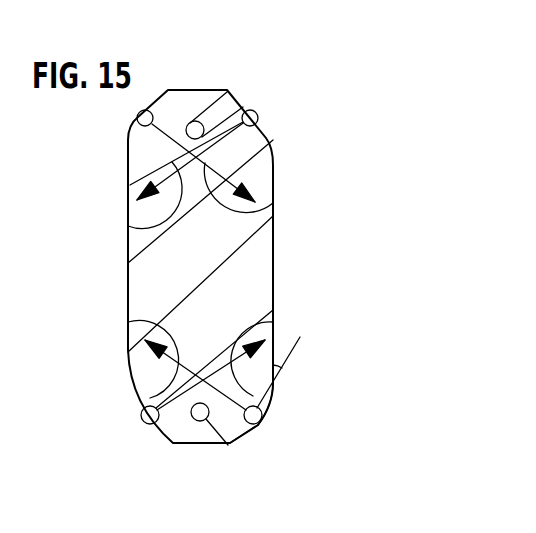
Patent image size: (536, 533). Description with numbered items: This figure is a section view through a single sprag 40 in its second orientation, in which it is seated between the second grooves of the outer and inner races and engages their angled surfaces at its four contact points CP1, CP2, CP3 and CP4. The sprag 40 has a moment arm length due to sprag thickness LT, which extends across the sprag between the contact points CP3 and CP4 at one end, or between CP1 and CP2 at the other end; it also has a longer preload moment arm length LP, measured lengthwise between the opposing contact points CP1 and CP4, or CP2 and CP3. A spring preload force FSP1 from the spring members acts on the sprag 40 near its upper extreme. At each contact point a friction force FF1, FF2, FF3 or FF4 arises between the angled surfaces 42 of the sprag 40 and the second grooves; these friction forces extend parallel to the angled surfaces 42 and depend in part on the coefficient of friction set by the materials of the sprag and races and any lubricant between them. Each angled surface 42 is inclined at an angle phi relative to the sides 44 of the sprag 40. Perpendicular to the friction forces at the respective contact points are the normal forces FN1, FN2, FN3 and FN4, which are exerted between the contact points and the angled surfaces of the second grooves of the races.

The sprag 40 is at (228, 90).
The angled surface 42 is at (272, 394).
The side 44 is at (273, 262).
The contact point CP1 is at (145, 422).
The contact point CP2 is at (262, 415).
The contact point CP3 is at (258, 118).
The contact point CP4 is at (139, 117).
The friction force FF1 is at (149, 424).
The friction force FF2 is at (262, 418).
The friction force FF3 is at (257, 124).
The friction force FF4 is at (140, 122).
The normal force FN1 is at (273, 308).
The normal force FN2 is at (128, 322).
The normal force FN3 is at (128, 226).
The normal force FN4 is at (273, 203).
The spring preload force FSP1 is at (243, 108).
The angle phi is at (290, 338).
The moment arm length due to sprag thickness LT is at (253, 72).
The preload moment arm length LP is at (108, 125).